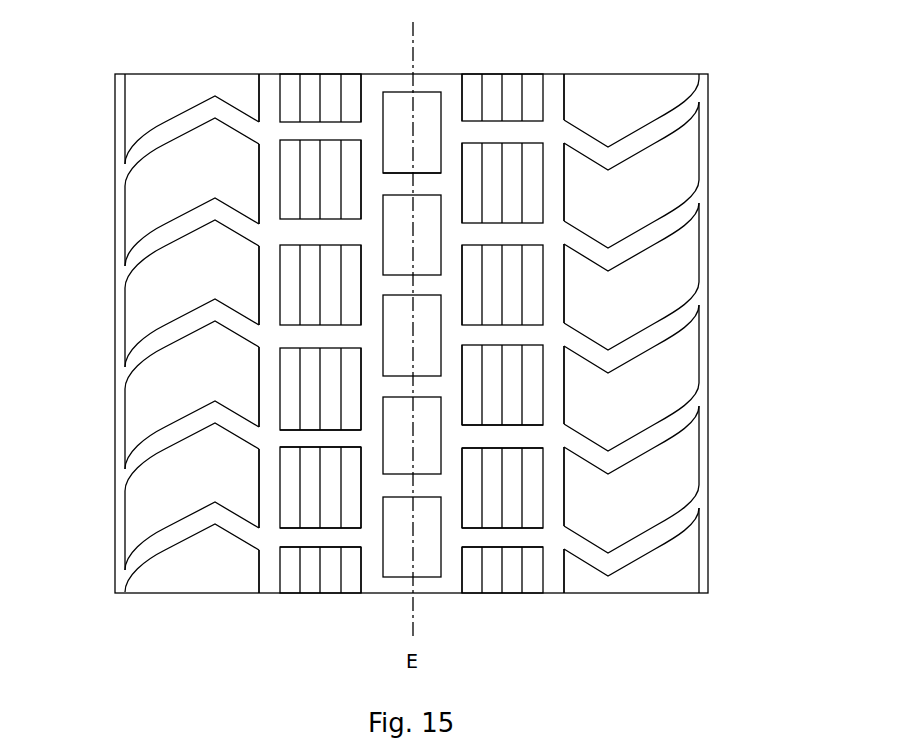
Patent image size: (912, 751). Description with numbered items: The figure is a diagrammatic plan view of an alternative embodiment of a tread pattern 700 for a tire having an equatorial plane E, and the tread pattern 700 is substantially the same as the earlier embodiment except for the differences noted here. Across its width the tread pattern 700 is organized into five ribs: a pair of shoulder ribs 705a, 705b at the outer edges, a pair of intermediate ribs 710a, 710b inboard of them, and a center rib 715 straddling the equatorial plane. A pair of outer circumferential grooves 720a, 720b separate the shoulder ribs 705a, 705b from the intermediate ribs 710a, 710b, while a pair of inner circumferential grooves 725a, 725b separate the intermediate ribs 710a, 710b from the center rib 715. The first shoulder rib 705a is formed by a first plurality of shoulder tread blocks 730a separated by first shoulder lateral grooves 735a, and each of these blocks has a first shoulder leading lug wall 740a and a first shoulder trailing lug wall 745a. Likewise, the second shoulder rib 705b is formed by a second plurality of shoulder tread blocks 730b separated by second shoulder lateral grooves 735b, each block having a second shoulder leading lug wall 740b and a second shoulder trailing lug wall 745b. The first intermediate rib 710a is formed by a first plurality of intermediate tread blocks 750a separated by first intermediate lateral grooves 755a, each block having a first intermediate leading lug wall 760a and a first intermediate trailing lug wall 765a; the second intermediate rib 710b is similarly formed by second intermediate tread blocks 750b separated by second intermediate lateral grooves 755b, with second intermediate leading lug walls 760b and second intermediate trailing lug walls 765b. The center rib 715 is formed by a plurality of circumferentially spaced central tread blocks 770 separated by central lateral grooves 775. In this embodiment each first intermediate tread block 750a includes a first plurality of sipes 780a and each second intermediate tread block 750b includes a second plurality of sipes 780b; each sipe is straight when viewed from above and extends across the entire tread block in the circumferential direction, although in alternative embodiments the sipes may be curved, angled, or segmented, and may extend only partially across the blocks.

The tread pattern 700 is at (678, 642).
The first shoulder rib 705a is at (197, 604).
The second shoulder rib 705b is at (682, 607).
The first intermediate rib 710a is at (300, 604).
The second intermediate rib 710b is at (477, 618).
The center rib 715 is at (418, 85).
The outer circumferential groove 720a is at (270, 80).
The outer circumferential groove 720b is at (553, 77).
The inner circumferential groove 725a is at (372, 80).
The inner circumferential groove 725b is at (450, 85).
The first shoulder tread block 730a is at (146, 107).
The second shoulder tread block 730b is at (647, 85).
The first shoulder lateral groove 735a is at (168, 228).
The second shoulder lateral groove 735b is at (679, 125).
The first shoulder leading lug wall 740a is at (149, 355).
The second shoulder leading lug wall 740b is at (653, 353).
The first shoulder trailing lug wall 745a is at (152, 431).
The second shoulder trailing lug wall 745b is at (651, 431).
The first intermediate tread block 750a is at (355, 585).
The second intermediate tread block 750b is at (495, 585).
The first intermediate lateral groove 755a is at (303, 535).
The second intermediate lateral groove 755b is at (508, 535).
The first intermediate leading lug wall 760a is at (322, 348).
The second intermediate leading lug wall 760b is at (508, 348).
The first intermediate trailing lug wall 765a is at (325, 430).
The second intermediate trailing lug wall 765b is at (507, 425).
The central tread block 770 is at (397, 102).
The central lateral groove 775 is at (432, 180).
The first sipe 780a is at (300, 303).
The second sipe 780b is at (522, 205).